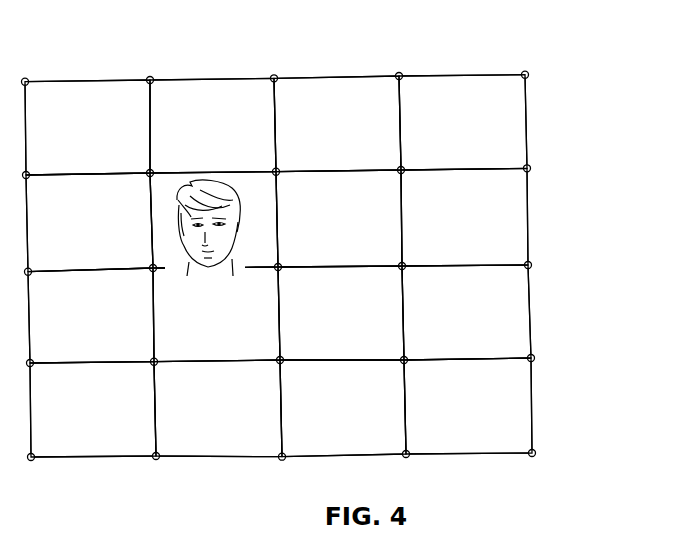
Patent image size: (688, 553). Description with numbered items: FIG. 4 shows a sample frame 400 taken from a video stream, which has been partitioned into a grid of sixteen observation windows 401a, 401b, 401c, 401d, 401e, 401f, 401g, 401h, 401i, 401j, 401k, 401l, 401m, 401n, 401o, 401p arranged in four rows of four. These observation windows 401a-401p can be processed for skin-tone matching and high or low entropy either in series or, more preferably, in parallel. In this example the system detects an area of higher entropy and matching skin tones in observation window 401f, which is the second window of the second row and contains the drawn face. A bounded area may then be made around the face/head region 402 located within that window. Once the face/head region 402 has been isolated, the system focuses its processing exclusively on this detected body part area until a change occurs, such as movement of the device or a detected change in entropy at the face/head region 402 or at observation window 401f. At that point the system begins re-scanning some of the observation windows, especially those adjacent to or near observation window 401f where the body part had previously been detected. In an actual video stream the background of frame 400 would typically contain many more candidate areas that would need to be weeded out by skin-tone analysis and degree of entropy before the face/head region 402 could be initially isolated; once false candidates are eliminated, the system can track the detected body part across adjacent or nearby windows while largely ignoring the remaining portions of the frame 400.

The sample frame 400 is at (348, 237).
The observation window 401a is at (87, 127).
The observation window 401b is at (213, 125).
The observation window 401c is at (337, 124).
The observation window 401d is at (463, 122).
The observation window 401e is at (89, 222).
The observation window 401f is at (206, 159).
The observation window 401g is at (339, 218).
The observation window 401h is at (464, 217).
The observation window 401i is at (91, 315).
The observation window 401j is at (216, 314).
The observation window 401k is at (341, 313).
The observation window 401l is at (466, 312).
The observation window 401m is at (93, 409).
The observation window 401n is at (218, 408).
The observation window 401o is at (343, 408).
The observation window 401p is at (468, 406).
The face/head region 402 is at (260, 162).